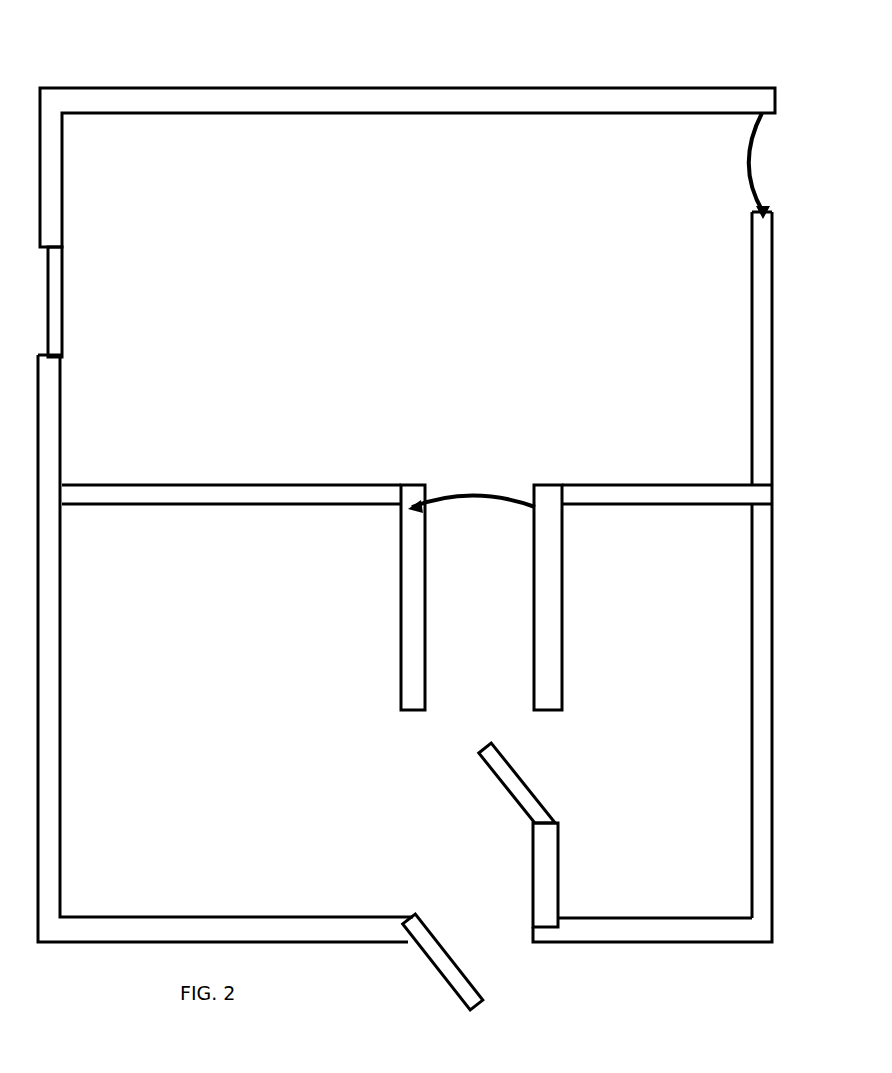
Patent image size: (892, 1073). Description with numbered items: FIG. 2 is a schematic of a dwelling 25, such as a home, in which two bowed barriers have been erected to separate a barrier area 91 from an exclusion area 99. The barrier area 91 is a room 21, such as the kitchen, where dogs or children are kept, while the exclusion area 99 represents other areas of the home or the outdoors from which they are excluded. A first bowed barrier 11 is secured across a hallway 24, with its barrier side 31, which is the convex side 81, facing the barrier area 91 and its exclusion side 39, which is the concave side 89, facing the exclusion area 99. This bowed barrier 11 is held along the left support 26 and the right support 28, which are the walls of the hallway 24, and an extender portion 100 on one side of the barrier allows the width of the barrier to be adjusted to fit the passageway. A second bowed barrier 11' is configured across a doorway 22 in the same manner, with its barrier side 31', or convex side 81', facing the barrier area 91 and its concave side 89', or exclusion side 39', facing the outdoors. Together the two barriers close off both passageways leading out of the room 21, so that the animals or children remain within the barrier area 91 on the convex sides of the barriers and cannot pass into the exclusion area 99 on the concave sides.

The dwelling 25 is at (134, 97).
The room 21 is at (551, 130).
The doorway 22 is at (756, 100).
The convex side 81' is at (729, 159).
The barrier side 31' is at (732, 159).
The second bowed barrier 11' is at (729, 161).
The exclusion side 39' is at (734, 159).
The concave side 89' is at (731, 159).
The barrier area 91 is at (435, 264).
The hallway 24 is at (416, 498).
The barrier side 31 is at (471, 502).
The convex side 81 is at (471, 502).
The bowed barrier 11 is at (490, 498).
The extender portion 100 is at (540, 500).
The exclusion side 39 is at (471, 537).
The concave side 89 is at (471, 537).
The left support 26 is at (427, 656).
The right support 28 is at (534, 636).
The exclusion area 99 is at (464, 646).